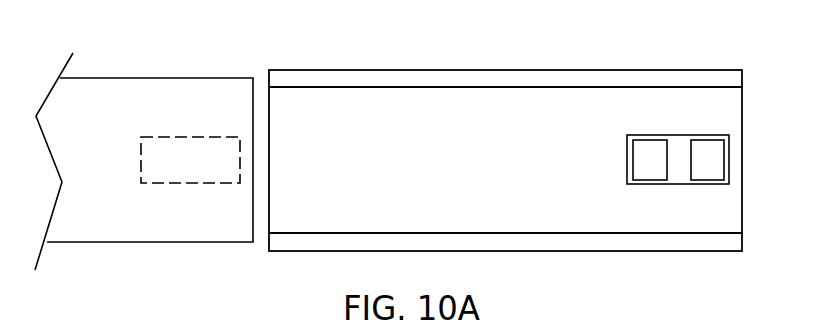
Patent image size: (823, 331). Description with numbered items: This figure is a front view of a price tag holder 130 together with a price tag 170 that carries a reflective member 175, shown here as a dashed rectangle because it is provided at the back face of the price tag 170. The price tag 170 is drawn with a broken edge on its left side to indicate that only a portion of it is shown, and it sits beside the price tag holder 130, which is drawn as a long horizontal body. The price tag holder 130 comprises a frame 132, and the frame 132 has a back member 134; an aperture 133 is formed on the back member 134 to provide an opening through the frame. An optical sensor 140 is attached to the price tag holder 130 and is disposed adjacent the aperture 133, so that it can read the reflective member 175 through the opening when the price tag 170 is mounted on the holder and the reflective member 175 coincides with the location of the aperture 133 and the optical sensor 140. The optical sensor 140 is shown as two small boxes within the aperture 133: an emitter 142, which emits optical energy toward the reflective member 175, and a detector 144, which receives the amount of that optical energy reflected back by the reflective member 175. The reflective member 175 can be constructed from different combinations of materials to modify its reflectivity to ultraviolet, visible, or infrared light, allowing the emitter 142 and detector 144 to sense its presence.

The price tag holder 130 is at (720, 55).
The frame 132 is at (743, 98).
The aperture 133 is at (653, 135).
The back member 134 is at (728, 213).
The optical sensor 140 is at (680, 155).
The emitter 142 is at (655, 182).
The detector 144 is at (711, 182).
The price tag 170 is at (136, 78).
The reflective member 175 is at (189, 137).